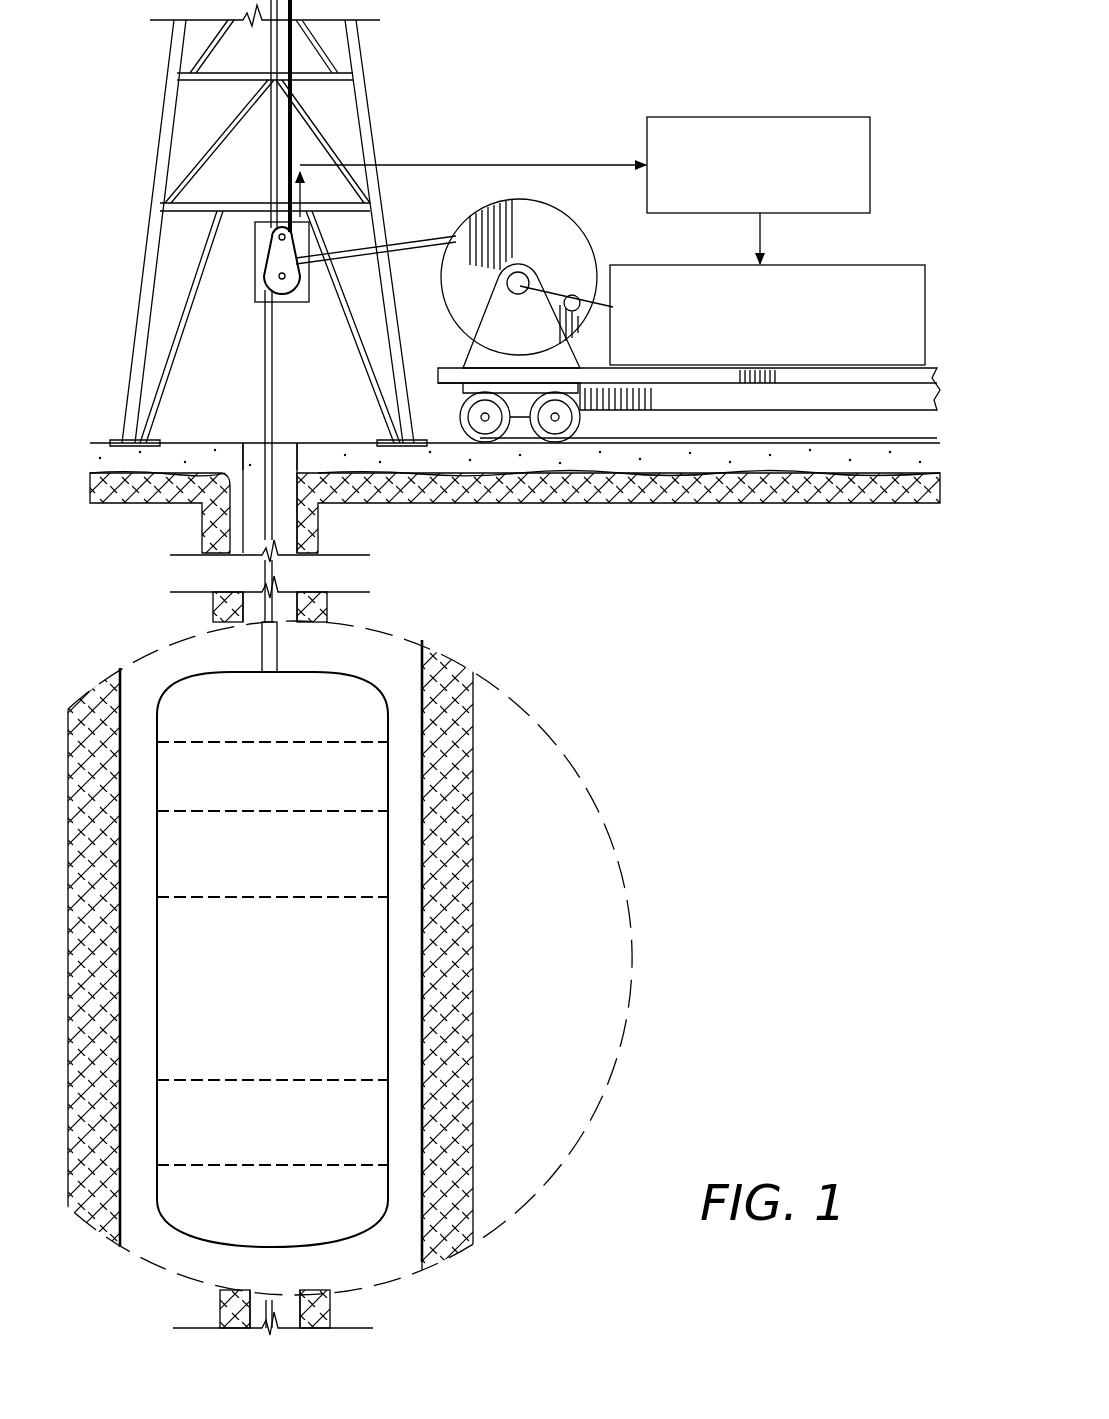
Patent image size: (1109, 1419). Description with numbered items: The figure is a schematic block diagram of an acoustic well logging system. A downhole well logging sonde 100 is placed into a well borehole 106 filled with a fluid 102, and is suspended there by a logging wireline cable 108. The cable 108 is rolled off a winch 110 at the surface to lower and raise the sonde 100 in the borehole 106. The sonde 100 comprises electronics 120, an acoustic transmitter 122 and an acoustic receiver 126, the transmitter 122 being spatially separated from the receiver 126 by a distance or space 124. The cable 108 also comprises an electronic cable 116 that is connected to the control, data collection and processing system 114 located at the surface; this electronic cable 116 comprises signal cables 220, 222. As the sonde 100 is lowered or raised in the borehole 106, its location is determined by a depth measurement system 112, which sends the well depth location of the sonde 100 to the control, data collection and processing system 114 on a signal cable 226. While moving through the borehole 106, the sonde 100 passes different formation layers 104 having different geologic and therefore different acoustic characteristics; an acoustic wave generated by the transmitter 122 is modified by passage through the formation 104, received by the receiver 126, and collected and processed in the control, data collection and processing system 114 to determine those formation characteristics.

The downhole well logging sonde 100 is at (353, 932).
The fluid 102 is at (170, 652).
The formation layers 104 is at (712, 486).
The well borehole 106 is at (250, 445).
The logging wireline cable 108 is at (274, 401).
The winch 110 is at (592, 246).
The depth measurement system 112 is at (773, 117).
The control, data collection and processing system 114 is at (835, 265).
The electronic cable 116 is at (537, 300).
The electronics 120 is at (380, 772).
The acoustic transmitter 122 is at (380, 838).
The space 124 is at (380, 973).
The acoustic receiver 126 is at (380, 1113).
The signal cable 220 is at (524, 244).
The signal cable 222 is at (577, 300).
The signal cable 226 is at (760, 234).